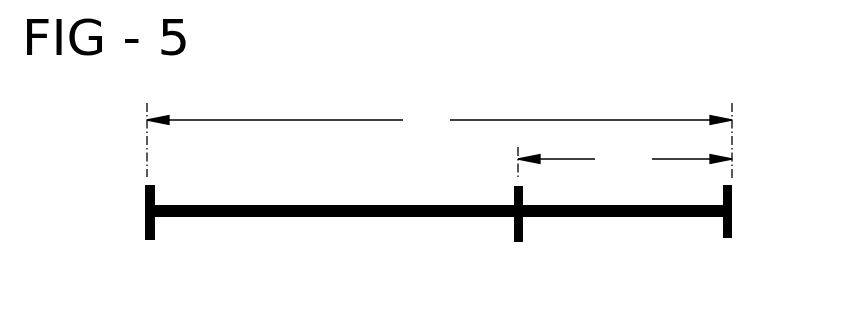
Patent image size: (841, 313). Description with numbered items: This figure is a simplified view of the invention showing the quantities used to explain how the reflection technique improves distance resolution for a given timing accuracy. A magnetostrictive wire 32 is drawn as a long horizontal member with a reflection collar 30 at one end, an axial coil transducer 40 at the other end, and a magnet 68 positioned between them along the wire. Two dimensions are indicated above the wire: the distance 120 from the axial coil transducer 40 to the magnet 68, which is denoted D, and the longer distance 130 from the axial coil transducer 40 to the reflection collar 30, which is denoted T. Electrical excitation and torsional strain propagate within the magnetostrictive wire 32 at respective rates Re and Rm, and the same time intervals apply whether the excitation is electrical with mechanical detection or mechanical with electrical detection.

The reflection collar 30 is at (147, 227).
The magnetostrictive wire 32 is at (378, 217).
The axial coil transducer 40 is at (732, 223).
The magnet 68 is at (515, 242).
The distance T 130 is at (439, 141).
The distance D 120 is at (625, 163).